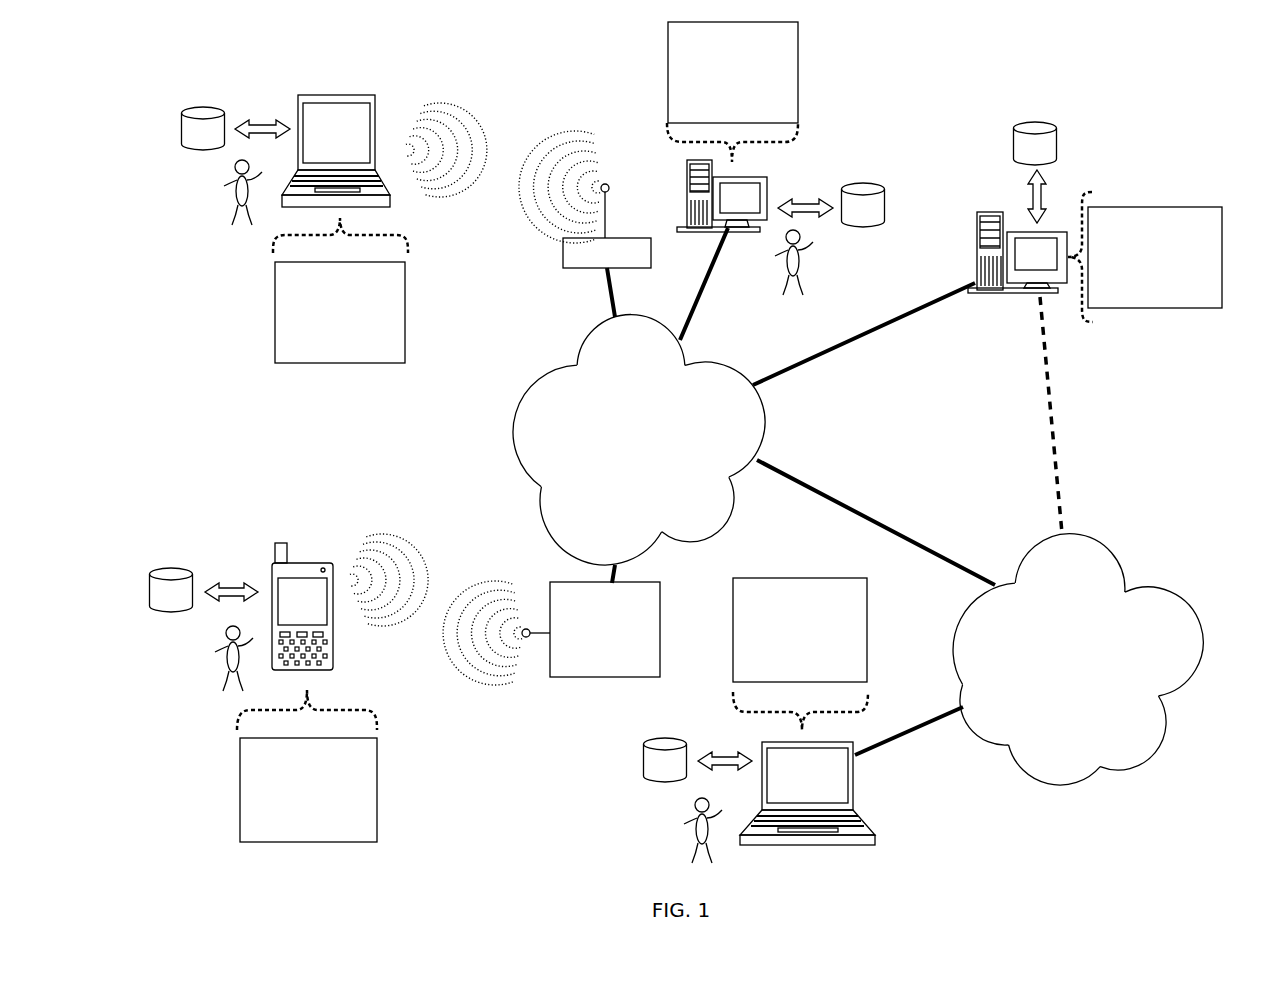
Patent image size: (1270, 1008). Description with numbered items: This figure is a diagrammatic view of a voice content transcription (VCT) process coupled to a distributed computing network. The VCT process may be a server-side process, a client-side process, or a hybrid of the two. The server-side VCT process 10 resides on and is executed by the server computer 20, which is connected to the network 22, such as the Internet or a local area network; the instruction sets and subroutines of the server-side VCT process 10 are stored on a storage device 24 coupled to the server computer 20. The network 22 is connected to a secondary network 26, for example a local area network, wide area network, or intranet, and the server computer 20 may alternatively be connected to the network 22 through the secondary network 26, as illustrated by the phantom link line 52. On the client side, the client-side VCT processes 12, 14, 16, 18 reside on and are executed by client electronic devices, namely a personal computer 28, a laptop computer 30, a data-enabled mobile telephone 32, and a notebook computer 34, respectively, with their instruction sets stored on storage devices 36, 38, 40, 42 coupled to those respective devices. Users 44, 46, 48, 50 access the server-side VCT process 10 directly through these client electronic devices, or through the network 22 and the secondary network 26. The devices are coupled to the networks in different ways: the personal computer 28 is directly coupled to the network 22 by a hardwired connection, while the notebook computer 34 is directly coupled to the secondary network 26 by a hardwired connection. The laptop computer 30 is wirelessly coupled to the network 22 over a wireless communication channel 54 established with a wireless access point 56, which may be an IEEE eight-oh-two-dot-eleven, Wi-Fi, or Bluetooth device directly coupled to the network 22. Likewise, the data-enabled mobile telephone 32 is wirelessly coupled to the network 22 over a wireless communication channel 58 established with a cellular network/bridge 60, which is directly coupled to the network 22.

The server-side VCT process 10 is at (1225, 228).
The client-side VCT process 12 is at (798, 102).
The client-side VCT process 14 is at (405, 284).
The client-side VCT process 16 is at (377, 757).
The client-side VCT process 18 is at (867, 650).
The server computer 20 is at (972, 237).
The network 22 is at (754, 406).
The storage device 24 is at (1035, 143).
The network 26 is at (1029, 659).
The personal computer 28 is at (768, 192).
The laptop computer 30 is at (370, 120).
The data-enabled mobile telephone 32 is at (335, 618).
The notebook computer 34 is at (853, 787).
The storage device 36 is at (863, 205).
The storage device 38 is at (203, 128).
The storage device 40 is at (171, 590).
The storage device 42 is at (665, 760).
The user 44 is at (812, 243).
The user 46 is at (205, 185).
The user 48 is at (208, 643).
The user 50 is at (668, 823).
The phantom link line 52 is at (1047, 400).
The wireless communication channel 54 is at (513, 133).
The wireless access point 56 is at (557, 253).
The wireless communication channel 58 is at (443, 582).
The cellular network/bridge 60 is at (663, 597).